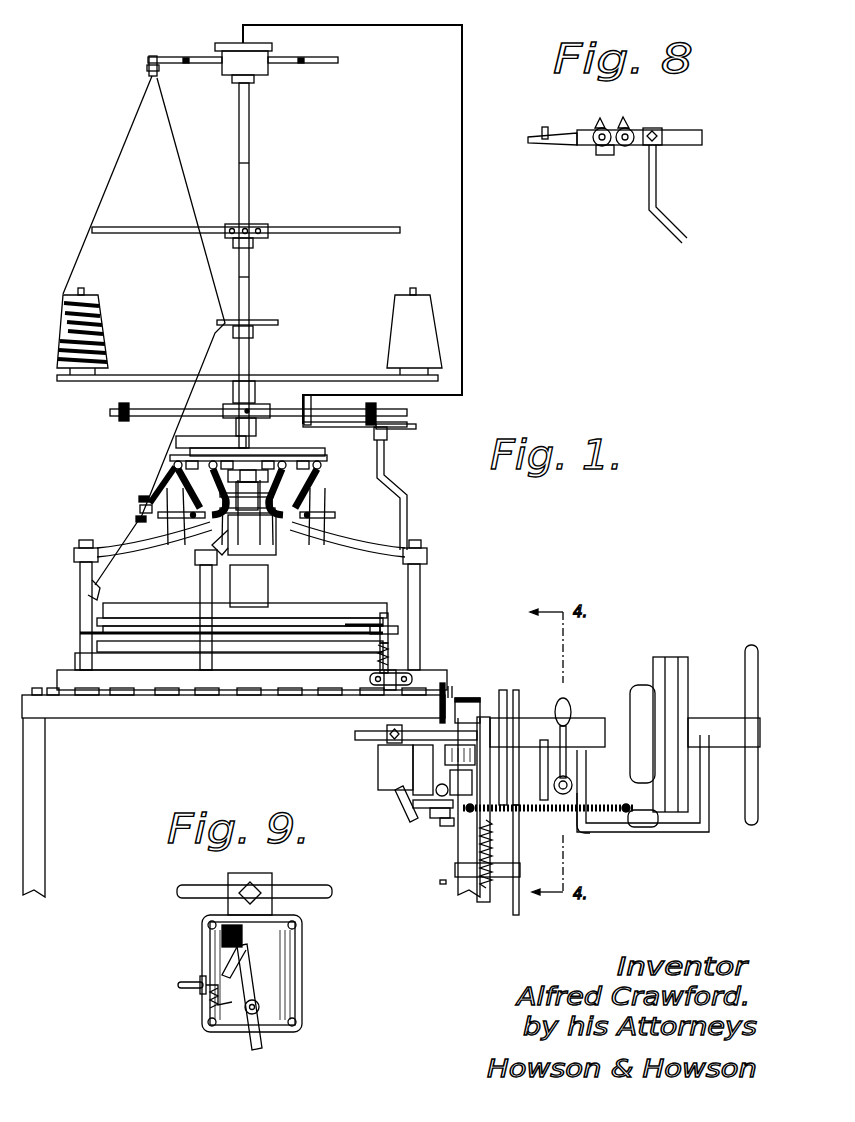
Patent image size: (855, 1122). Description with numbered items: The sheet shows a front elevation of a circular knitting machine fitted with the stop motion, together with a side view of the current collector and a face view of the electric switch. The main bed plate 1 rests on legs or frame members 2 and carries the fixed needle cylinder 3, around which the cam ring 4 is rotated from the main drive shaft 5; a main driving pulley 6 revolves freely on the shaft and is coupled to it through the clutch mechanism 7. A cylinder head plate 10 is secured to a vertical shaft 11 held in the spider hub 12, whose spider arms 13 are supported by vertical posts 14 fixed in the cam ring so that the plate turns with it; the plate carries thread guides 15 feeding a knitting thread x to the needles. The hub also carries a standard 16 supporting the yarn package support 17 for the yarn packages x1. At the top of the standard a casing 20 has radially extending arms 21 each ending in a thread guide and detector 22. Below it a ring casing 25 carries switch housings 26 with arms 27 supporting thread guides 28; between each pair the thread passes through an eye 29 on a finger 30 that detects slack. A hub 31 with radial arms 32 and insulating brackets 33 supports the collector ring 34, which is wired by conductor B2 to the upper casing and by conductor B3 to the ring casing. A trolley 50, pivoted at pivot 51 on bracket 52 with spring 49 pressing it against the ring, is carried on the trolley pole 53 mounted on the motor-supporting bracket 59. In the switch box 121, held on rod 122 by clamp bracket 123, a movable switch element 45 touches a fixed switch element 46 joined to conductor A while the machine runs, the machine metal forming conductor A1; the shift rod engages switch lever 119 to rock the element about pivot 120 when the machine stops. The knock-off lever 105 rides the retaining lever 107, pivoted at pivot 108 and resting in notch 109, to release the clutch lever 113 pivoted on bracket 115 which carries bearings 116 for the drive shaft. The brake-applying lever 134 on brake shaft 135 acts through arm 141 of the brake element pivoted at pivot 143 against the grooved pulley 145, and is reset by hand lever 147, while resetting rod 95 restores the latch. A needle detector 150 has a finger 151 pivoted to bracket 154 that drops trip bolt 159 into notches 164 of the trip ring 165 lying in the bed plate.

In FIG. 1, the main bed plate 1 is at (136, 716).
In FIG. 1, the legs or frame members 2 is at (40, 840).
In FIG. 1, the needle cylinder 3 is at (78, 623).
In FIG. 1, the cam ring 4 is at (60, 672).
In FIG. 1, the main drive shaft 5 is at (763, 720).
In FIG. 1, the main driving pulley 6 is at (676, 657).
In FIG. 1, the clutch mechanism 7 is at (640, 690).
In FIG. 1, the cylinder head plate 10 is at (270, 612).
In FIG. 1, the vertical shaft 11 is at (265, 568).
In FIG. 1, the spider hub 12 is at (292, 548).
In FIG. 1, the spider arms 13 is at (130, 552).
In FIG. 1, the vertical posts 14 is at (78, 588).
In FIG. 1, the thread guides 15 is at (102, 589).
In FIG. 1, the standard 16 is at (250, 125).
In FIG. 1, the yarn package support 17 is at (283, 375).
In FIG. 1, the casing 20 is at (262, 78).
In FIG. 1, the radially extending arms 21 is at (176, 63).
In FIG. 1, the thread guide and detector 22 is at (146, 68).
In FIG. 1, the ring casing 25 is at (302, 456).
In FIG. 1, the switch housings 26 is at (176, 462).
In FIG. 1, the arms 27 is at (195, 480).
In FIG. 1, the thread guides 28 is at (138, 498).
In FIG. 1, the eye 29 is at (139, 507).
In FIG. 1, the finger 30 is at (150, 484).
In FIG. 1, the hub 31 is at (258, 408).
In FIG. 1, the radial arms 32 is at (152, 409).
In FIG. 1, the bracket 33 is at (122, 404).
In FIG. 1, the ring 34 is at (118, 416).
In FIG. 8, the ring 34 is at (547, 126).
In FIG. 9, the switch element 45 is at (248, 960).
In FIG. 9, the fixed switch element 46 is at (245, 941).
In FIG. 8, the spring 49 is at (606, 158).
In FIG. 1, the trolley 50 is at (272, 455).
In FIG. 8, the trolley 50 is at (568, 146).
In FIG. 8, the pivot 51 is at (600, 148).
In FIG. 1, the bracket 52 is at (376, 440).
In FIG. 8, the bracket 52 is at (630, 127).
In FIG. 1, the trolley pole 53 is at (407, 510).
In FIG. 8, the trolley pole 53 is at (660, 170).
In FIG. 1, the motor-supporting bracket 59 is at (418, 776).
In FIG. 1, the resetting rod 95 is at (470, 872).
In FIG. 1, the knock-off lever 105 is at (420, 804).
In FIG. 1, the retaining lever 107 is at (430, 812).
In FIG. 1, the pivot 108 is at (440, 820).
In FIG. 1, the notch 109 is at (452, 828).
In FIG. 1, the clutch lever 113 is at (640, 828).
In FIG. 1, the bracket 115 is at (700, 832).
In FIG. 1, the bearings 116 is at (580, 716).
In FIG. 1, the switch lever 119 is at (405, 795).
In FIG. 9, the switch lever 119 is at (262, 1050).
In FIG. 9, the pivot 120 is at (260, 1007).
In FIG. 1, the switch box 121 is at (392, 763).
In FIG. 9, the switch box 121 is at (302, 961).
In FIG. 1, the rod 122 is at (386, 742).
In FIG. 9, the rod 122 is at (310, 898).
In FIG. 1, the clamp bracket 123 is at (458, 697).
In FIG. 1, the brake-applying lever 134 is at (519, 838).
In FIG. 1, the brake shaft 135 is at (583, 832).
In FIG. 1, the arm 141 is at (544, 738).
In FIG. 1, the pivot 143 is at (545, 814).
In FIG. 1, the grooved pulley 145 is at (503, 690).
In FIG. 1, the hand lever 147 is at (568, 700).
In FIG. 1, the needle detector 150 is at (398, 622).
In FIG. 1, the finger 151 is at (355, 622).
In FIG. 1, the bracket 154 is at (378, 662).
In FIG. 1, the trip bolt 159 is at (412, 662).
In FIG. 1, the notches 164 is at (266, 690).
In FIG. 1, the trip ring 165 is at (88, 690).
In FIG. 1, the knitting thread x is at (172, 124).
In FIG. 1, the yarn package x1 is at (105, 340).
In FIG. 1, the conductor B2 is at (462, 283).
In FIG. 1, the conductor B3 is at (185, 436).
In FIG. 9, the conductor A is at (186, 990).
In FIG. 9, the conductor A1 is at (300, 988).